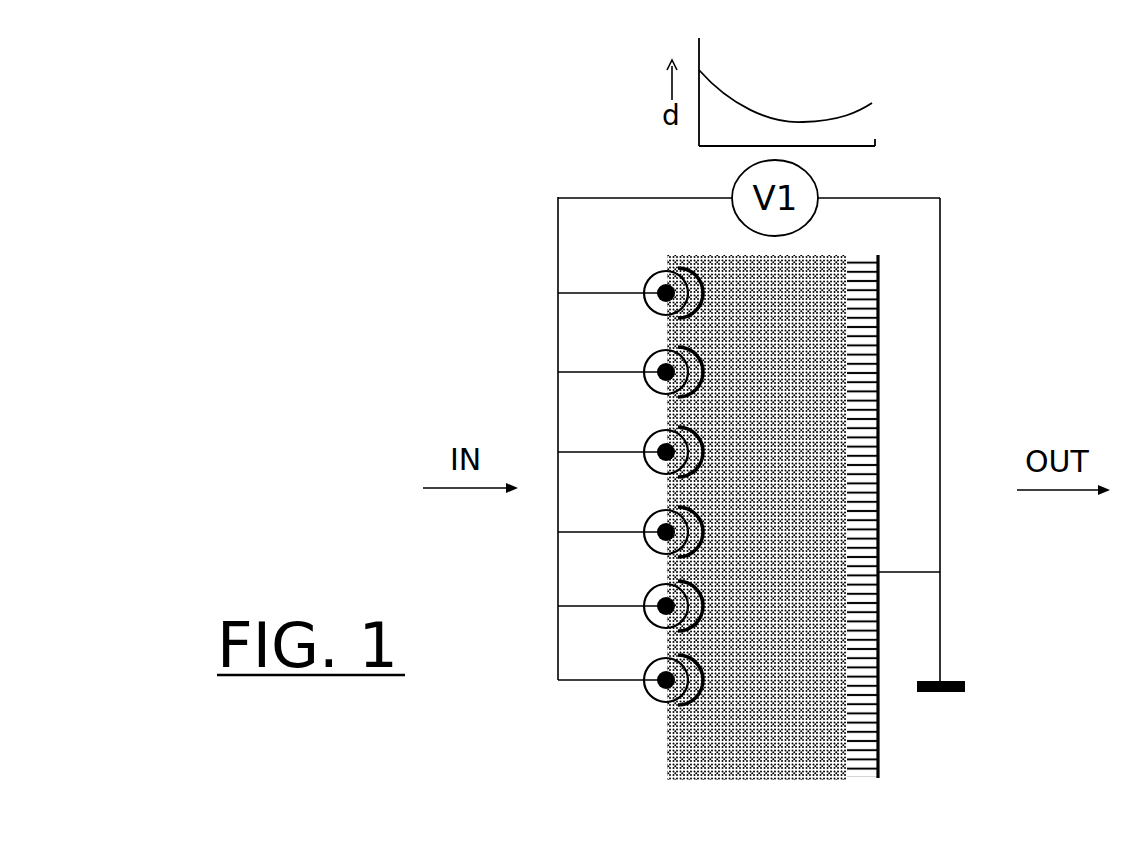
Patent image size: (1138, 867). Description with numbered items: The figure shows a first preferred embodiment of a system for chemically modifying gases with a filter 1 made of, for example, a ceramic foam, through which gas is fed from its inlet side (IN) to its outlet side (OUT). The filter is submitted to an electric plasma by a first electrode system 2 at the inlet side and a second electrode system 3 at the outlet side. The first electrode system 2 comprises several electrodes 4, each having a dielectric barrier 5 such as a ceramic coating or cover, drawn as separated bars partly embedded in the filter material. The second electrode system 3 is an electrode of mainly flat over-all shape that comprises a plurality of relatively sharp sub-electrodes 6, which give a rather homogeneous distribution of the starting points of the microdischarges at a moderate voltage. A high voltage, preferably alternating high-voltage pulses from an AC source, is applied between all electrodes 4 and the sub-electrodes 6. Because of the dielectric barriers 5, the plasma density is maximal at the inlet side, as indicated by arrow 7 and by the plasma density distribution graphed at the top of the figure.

The filter 1 is at (778, 734).
The first electrode system 2 is at (615, 512).
The second electrode system 3 is at (880, 752).
The electrodes 4 is at (663, 688).
The dielectric barrier 5 is at (654, 696).
The sub-electrodes 6 is at (858, 752).
The arrow 7 is at (708, 706).